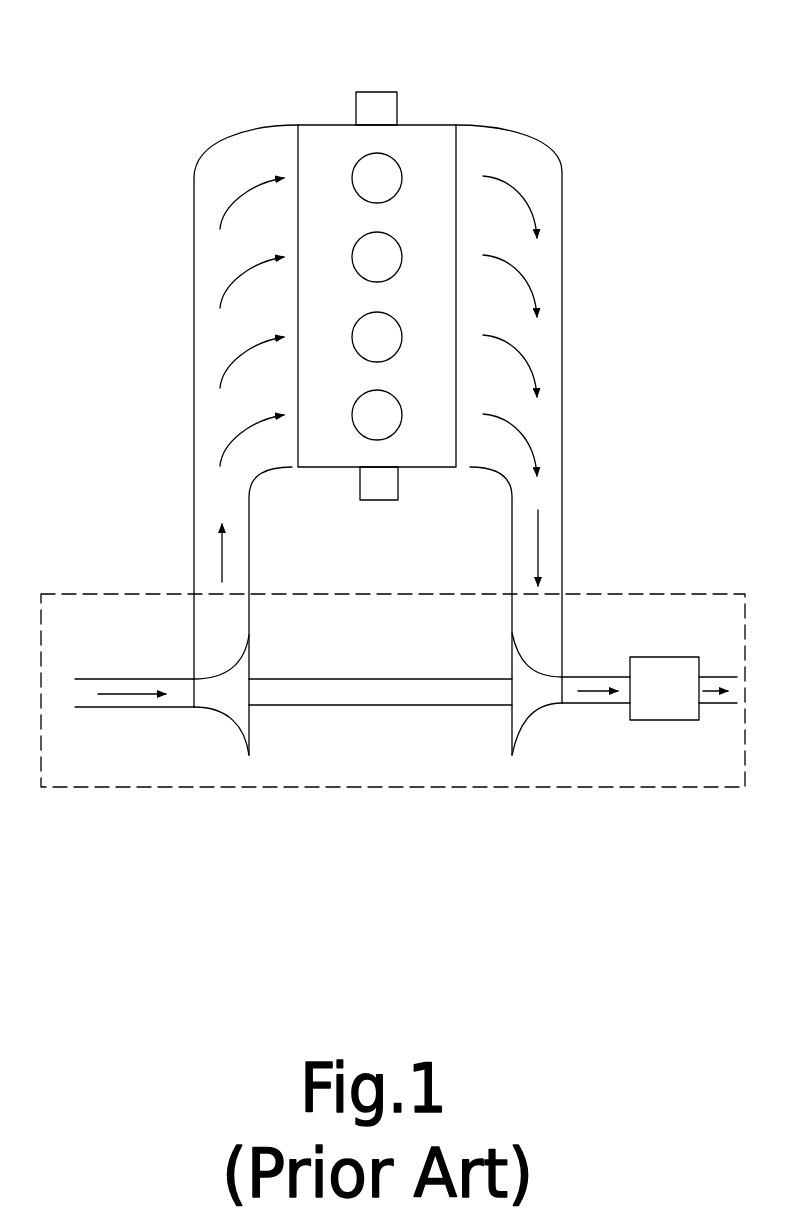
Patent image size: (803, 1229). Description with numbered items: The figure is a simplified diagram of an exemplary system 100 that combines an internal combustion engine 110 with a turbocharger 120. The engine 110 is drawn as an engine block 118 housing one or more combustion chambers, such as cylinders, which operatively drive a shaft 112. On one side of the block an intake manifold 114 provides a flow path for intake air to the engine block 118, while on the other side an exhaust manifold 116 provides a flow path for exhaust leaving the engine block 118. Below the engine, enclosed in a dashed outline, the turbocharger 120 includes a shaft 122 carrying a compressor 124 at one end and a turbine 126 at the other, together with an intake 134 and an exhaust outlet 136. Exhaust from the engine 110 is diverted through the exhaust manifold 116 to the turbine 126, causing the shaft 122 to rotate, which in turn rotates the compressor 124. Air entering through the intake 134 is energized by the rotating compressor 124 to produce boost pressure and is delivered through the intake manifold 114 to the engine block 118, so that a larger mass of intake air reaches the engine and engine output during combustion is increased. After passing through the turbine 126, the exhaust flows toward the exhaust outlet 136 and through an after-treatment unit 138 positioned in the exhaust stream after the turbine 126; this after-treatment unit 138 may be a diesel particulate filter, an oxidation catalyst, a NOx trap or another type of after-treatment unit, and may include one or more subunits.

The system 100 is at (554, 42).
The internal combustion engine 110 is at (337, 122).
The shaft 112 is at (377, 92).
The intake manifold 114 is at (215, 147).
The exhaust manifold 116 is at (556, 157).
The engine block 118 is at (448, 228).
The turbocharger 120 is at (628, 593).
The shaft 122 is at (380, 706).
The compressor 124 is at (253, 651).
The turbine 126 is at (511, 650).
The intake 134 is at (156, 679).
The exhaust outlet 136 is at (598, 675).
The after-treatment unit 138 is at (686, 699).